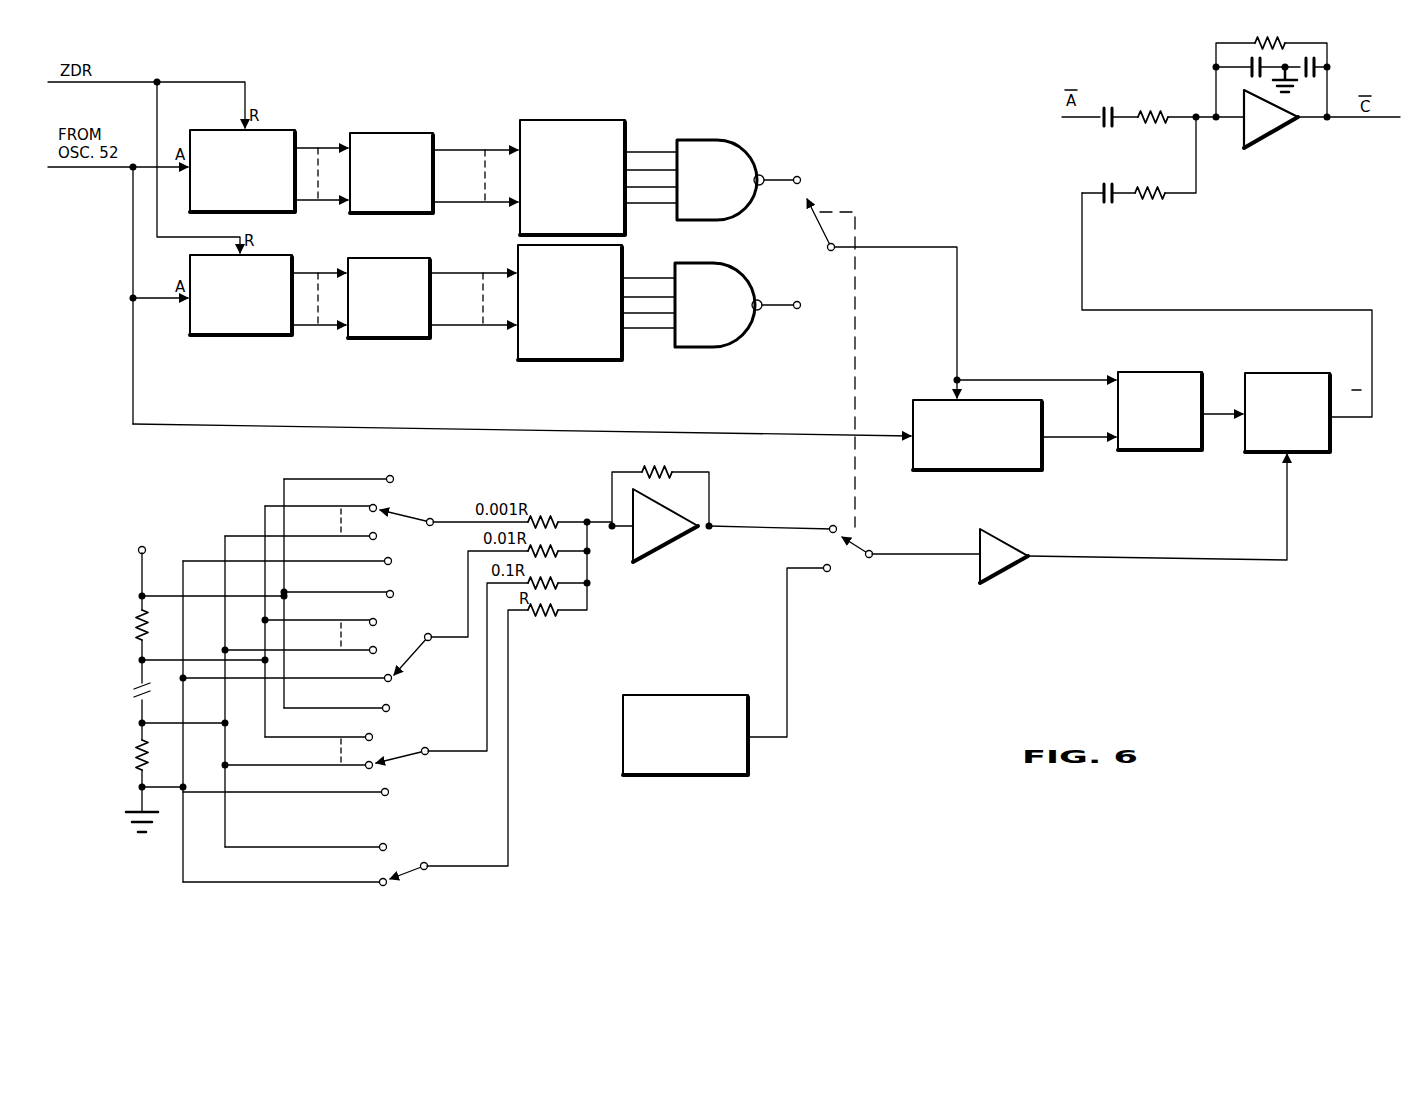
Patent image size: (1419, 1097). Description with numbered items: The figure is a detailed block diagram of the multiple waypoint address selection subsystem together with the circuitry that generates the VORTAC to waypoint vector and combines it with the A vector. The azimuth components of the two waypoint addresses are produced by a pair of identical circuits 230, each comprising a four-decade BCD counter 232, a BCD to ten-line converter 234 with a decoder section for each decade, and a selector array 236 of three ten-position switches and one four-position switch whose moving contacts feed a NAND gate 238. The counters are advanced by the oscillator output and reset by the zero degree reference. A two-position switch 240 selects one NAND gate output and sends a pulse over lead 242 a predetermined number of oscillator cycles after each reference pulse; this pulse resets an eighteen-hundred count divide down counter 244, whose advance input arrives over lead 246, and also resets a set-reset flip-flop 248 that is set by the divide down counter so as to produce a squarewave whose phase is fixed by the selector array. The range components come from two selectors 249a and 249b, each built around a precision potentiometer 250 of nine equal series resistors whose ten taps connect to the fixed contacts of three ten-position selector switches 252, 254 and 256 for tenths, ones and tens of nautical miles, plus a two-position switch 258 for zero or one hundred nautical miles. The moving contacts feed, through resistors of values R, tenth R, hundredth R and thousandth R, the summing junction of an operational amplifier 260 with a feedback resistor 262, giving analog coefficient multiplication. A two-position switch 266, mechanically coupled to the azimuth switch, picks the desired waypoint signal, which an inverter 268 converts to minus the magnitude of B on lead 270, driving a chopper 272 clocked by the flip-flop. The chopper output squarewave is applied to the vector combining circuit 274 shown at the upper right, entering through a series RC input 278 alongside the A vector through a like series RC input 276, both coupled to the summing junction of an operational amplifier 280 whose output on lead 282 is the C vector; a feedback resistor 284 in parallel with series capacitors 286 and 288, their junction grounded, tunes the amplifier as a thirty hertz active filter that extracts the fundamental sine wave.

The identical circuit 230 is at (461, 133).
The four-decade BCD counter 232 is at (283, 128).
The BCD to 10-line converter 234 is at (403, 128).
The selector array 236 is at (594, 120).
The NAND gate 238 is at (735, 140).
The two-position switch 240 is at (802, 227).
The lead 242 is at (957, 311).
The divide down counter 244 is at (990, 472).
The lead 246 is at (765, 430).
The set-reset flip-flop 248 is at (1146, 372).
The selector 249a is at (224, 680).
The selector 249b is at (714, 778).
The precision potentiometer 250 is at (127, 733).
The ten-position selector switch 252 is at (408, 507).
The ten-position selector switch 254 is at (397, 639).
The ten-position selector switch 256 is at (395, 741).
The two-position switch 258 is at (404, 856).
The operational amplifier 260 is at (675, 544).
The feedback resistor 262 is at (678, 468).
The two-position switch 266 is at (851, 564).
The inverter 268 is at (1016, 568).
The lead 270 is at (1160, 562).
The chopper 272 is at (1299, 373).
The operational amplifier filter circuit 274 is at (1277, 104).
The series RC input 276 is at (1160, 109).
The series RC input 278 is at (1160, 199).
The operational amplifier 280 is at (1285, 132).
The lead 282 is at (1360, 119).
The resistor 284 is at (1275, 44).
The capacitor 286 is at (1250, 68).
The capacitor 288 is at (1327, 67).